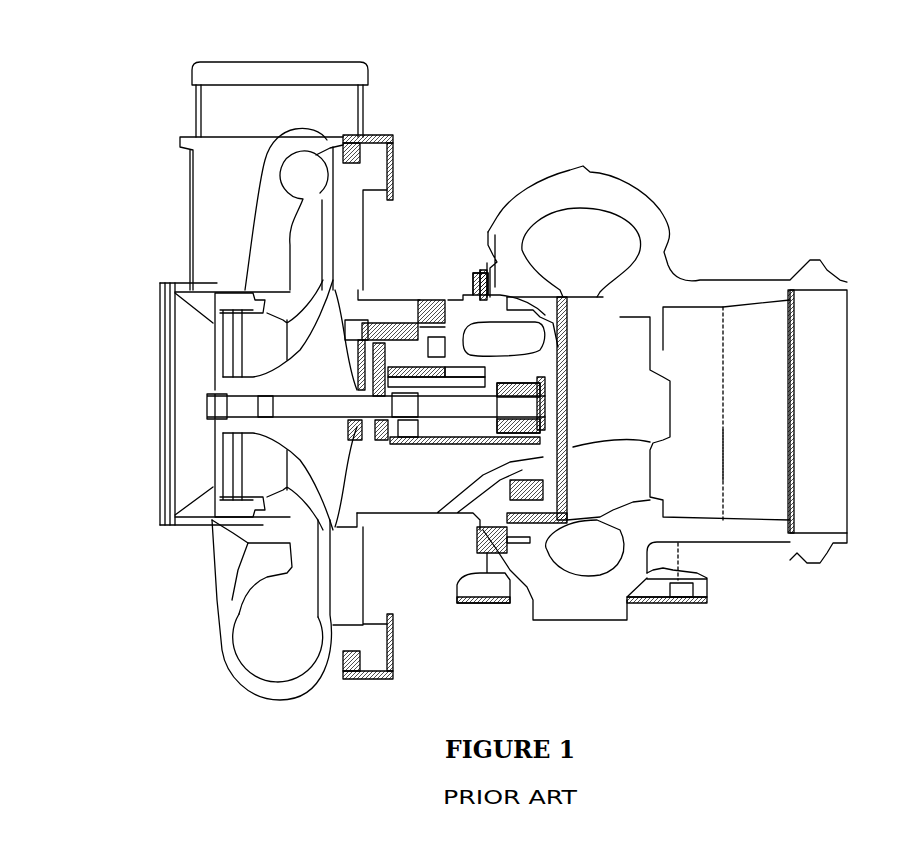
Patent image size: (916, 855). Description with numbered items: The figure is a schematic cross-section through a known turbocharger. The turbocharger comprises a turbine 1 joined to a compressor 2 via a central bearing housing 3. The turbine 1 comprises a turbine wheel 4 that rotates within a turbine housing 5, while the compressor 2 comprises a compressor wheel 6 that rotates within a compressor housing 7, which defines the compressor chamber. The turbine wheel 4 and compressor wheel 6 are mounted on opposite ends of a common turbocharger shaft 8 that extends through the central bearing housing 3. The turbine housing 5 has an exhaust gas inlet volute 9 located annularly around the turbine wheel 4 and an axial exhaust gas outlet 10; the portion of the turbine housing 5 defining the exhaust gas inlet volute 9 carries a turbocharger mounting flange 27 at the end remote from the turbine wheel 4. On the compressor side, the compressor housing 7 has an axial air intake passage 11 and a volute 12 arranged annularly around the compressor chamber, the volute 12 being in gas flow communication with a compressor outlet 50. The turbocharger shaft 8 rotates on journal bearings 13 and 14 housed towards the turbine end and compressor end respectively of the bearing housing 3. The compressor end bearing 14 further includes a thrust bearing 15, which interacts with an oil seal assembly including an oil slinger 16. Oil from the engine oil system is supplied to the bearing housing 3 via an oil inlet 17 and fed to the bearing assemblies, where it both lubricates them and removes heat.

The turbine 1 is at (786, 242).
The compressor 2 is at (178, 585).
The central bearing housing 3 is at (397, 323).
The turbine wheel 4 is at (592, 457).
The turbine housing 5 is at (780, 545).
The compressor wheel 6 is at (220, 427).
The compressor housing 7 is at (240, 263).
The turbocharger shaft 8 is at (460, 433).
The exhaust gas inlet volute 9 is at (590, 223).
The axial exhaust gas outlet 10 is at (775, 400).
The axial air intake passage 11 is at (180, 367).
The volute 12 is at (345, 138).
The journal bearing 13 is at (500, 372).
The journal bearing 14 is at (393, 357).
The thrust bearing 15 is at (372, 327).
The oil slinger 16 is at (360, 423).
The oil inlet 17 is at (437, 313).
The turbocharger mounting flange 27 is at (663, 603).
The compressor outlet 50 is at (270, 63).